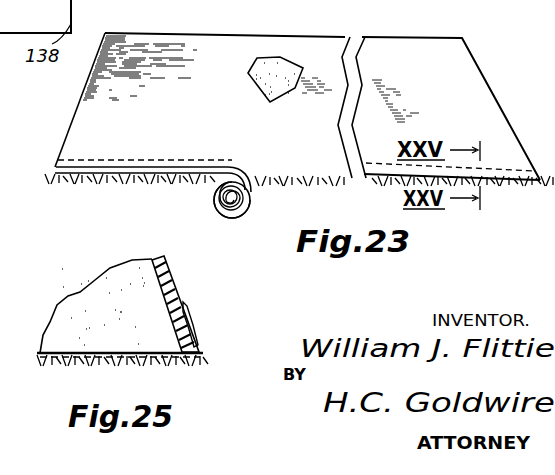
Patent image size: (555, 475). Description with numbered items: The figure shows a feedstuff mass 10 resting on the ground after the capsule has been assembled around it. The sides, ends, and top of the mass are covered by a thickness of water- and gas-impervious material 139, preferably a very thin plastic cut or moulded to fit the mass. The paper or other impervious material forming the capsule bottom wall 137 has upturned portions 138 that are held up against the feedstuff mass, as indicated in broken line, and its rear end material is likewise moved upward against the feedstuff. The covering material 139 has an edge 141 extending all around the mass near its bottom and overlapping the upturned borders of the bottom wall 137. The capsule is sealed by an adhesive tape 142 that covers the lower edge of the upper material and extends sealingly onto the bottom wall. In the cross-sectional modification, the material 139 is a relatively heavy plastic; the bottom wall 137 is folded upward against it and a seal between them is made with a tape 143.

In FIG. 23, the feedstuff mass 10 is at (272, 66).
In FIG. 25, the feedstuff mass 10 is at (80, 293).
In FIG. 23, the capsule bottom wall 137 is at (374, 177).
In FIG. 25, the capsule bottom wall 137 is at (200, 346).
In FIG. 23, the upturned portions 138 is at (238, 163).
In FIG. 23, the water- and gas-impervious material 139 is at (227, 34).
In FIG. 25, the water- and gas-impervious material 139 is at (190, 257).
In FIG. 23, the edge 141 is at (331, 170).
In FIG. 23, the adhesive tape 142 is at (222, 191).
In FIG. 25, the tape 143 is at (189, 318).